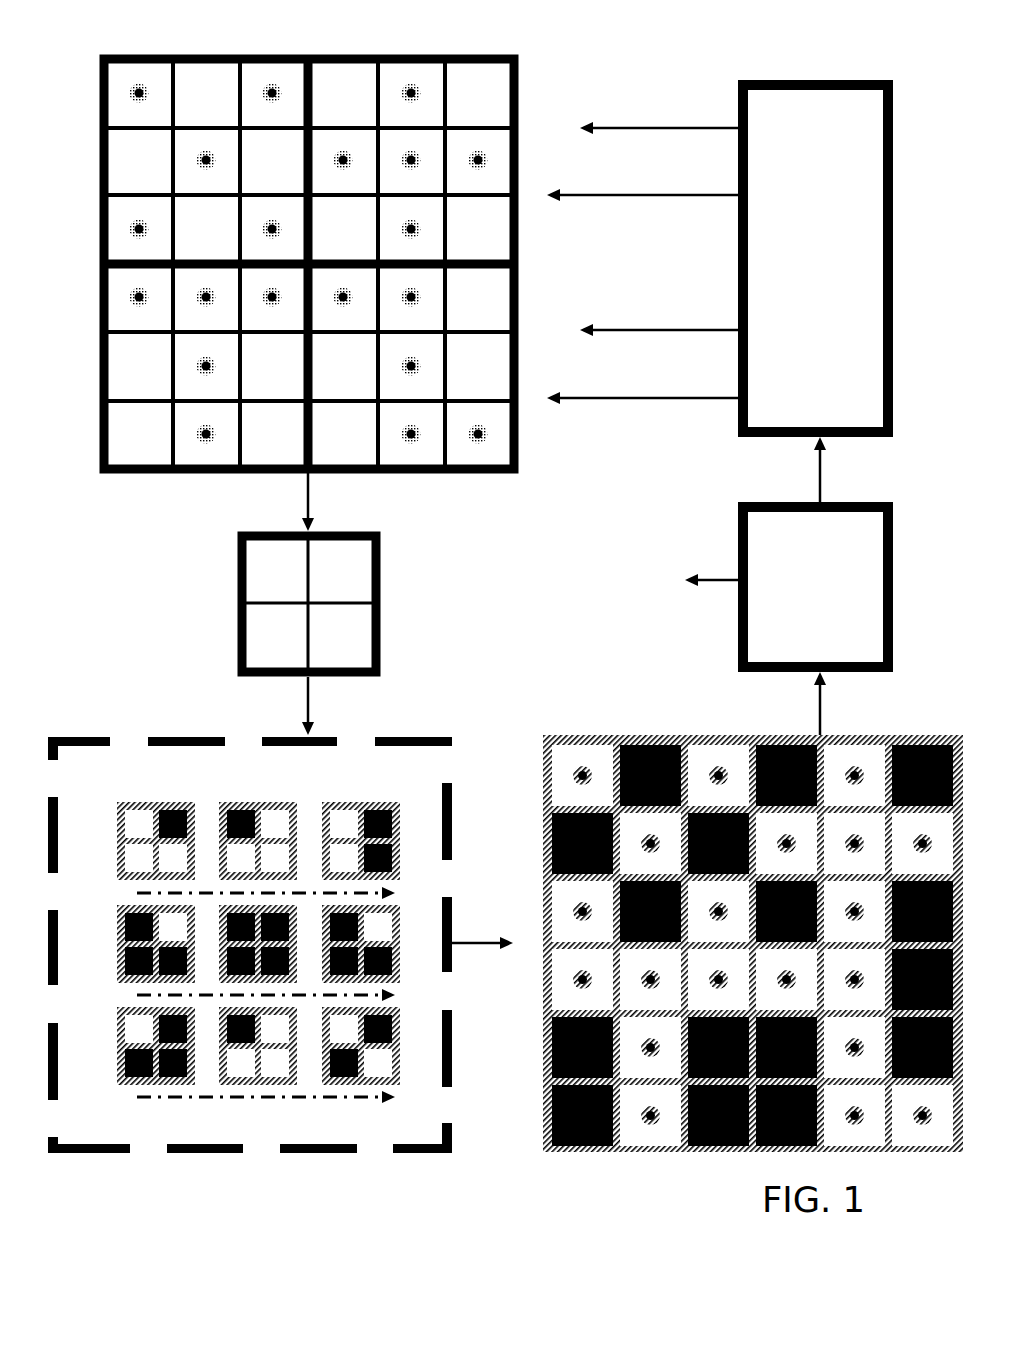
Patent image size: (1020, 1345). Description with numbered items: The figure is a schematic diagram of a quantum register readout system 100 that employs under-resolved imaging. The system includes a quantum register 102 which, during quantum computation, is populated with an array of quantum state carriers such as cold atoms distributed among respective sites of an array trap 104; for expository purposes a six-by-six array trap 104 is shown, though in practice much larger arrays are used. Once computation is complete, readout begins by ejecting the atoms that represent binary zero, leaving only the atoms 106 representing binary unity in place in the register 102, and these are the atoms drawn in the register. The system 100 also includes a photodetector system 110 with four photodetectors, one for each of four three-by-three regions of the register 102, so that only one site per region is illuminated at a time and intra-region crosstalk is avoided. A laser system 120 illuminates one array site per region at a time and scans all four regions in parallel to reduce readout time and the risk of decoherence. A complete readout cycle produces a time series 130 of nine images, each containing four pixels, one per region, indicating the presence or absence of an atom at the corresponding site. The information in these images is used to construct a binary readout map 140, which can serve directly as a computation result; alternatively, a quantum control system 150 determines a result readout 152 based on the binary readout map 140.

The quantum register readout system 100 is at (718, 222).
The quantum register 102 is at (309, 254).
The array trap 104 is at (96, 443).
The atoms 106 is at (487, 438).
The photodetector system 110 is at (446, 604).
The laser system 120 is at (815, 258).
The time series 130 is at (280, 945).
The binary readout map 140 is at (753, 932).
The control system 150 is at (815, 588).
The result readout 152 is at (613, 579).